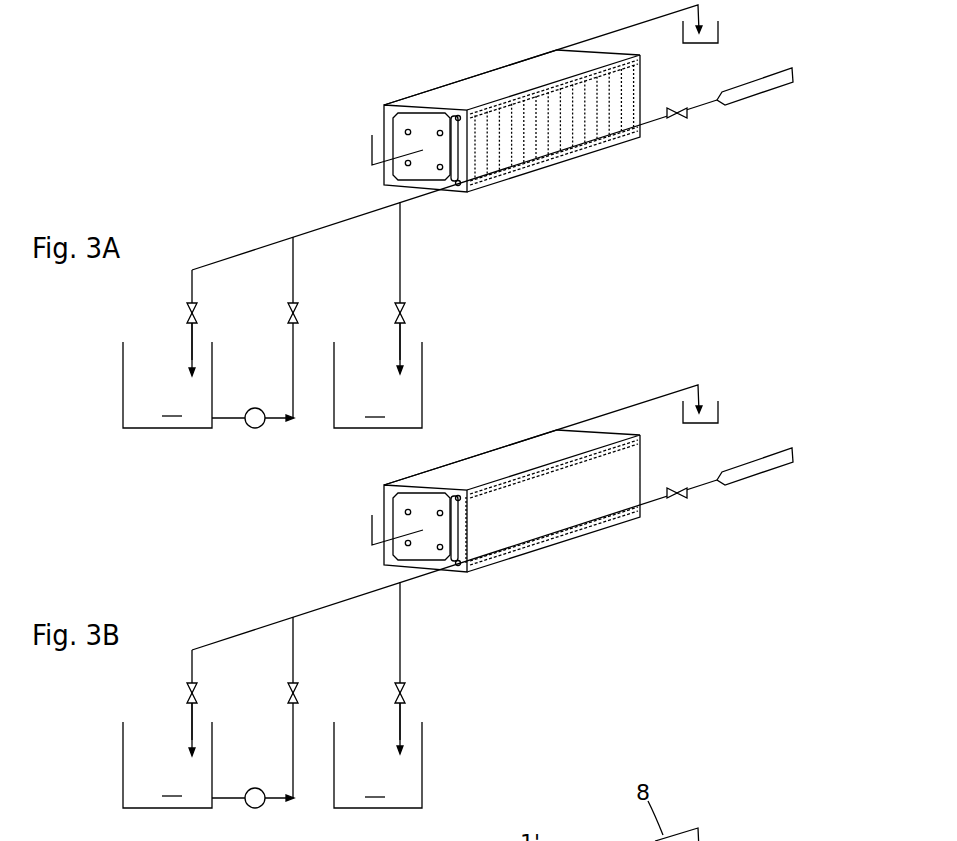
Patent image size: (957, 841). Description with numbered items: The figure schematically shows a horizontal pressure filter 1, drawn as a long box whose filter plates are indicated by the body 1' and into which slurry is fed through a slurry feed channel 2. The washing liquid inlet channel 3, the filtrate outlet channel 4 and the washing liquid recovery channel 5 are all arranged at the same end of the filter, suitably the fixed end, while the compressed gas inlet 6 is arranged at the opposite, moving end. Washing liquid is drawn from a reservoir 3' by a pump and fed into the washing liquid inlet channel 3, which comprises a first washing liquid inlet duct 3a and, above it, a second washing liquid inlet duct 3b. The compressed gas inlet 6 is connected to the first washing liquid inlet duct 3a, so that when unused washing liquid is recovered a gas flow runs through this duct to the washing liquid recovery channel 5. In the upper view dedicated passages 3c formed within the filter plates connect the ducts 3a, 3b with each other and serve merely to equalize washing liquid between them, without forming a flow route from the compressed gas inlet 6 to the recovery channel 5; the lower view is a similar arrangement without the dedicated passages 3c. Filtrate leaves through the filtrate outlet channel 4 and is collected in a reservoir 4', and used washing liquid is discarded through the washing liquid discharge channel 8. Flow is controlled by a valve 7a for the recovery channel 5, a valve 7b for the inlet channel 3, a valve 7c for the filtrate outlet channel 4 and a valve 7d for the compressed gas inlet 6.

In FIG. 3A, the horizontal pressure filter 1 is at (843, 269).
In FIG. 3B, the horizontal pressure filter 1 is at (845, 650).
In FIG. 3A, the container 1' is at (512, 96).
In FIG. 3B, the container 1' is at (512, 478).
In FIG. 3A, the slurry feed channel 2 is at (371, 146).
In FIG. 3B, the slurry feed channel 2 is at (361, 506).
In FIG. 3A, the washing liquid inlet channel 3 is at (253, 381).
In FIG. 3B, the washing liquid inlet channel 3 is at (253, 757).
In FIG. 3A, the liquid reservoir 3' is at (167, 385).
In FIG. 3B, the liquid reservoir 3' is at (167, 765).
In FIG. 3A, the first washing liquid inlet duct 3a is at (516, 168).
In FIG. 3B, the first washing liquid inlet duct 3a is at (554, 567).
In FIG. 3A, the second washing liquid inlet duct 3b is at (477, 107).
In FIG. 3B, the second washing liquid inlet duct 3b is at (554, 449).
In FIG. 3A, the dedicated passages 3c is at (583, 132).
In FIG. 3A, the filtrate outlet channel 4 is at (442, 341).
In FIG. 3B, the filtrate outlet channel 4 is at (442, 721).
In FIG. 3A, the reservoir 4' is at (378, 385).
In FIG. 3B, the reservoir 4' is at (378, 765).
In FIG. 3A, the washing liquid recovery channel 5 is at (191, 337).
In FIG. 3B, the washing liquid recovery channel 5 is at (143, 721).
In FIG. 3A, the compressed gas inlet 6 is at (707, 103).
In FIG. 3B, the compressed gas inlet 6 is at (750, 490).
In FIG. 3A, the valve 7a is at (188, 308).
In FIG. 3B, the valve 7a is at (138, 681).
In FIG. 3A, the valve 7b is at (290, 313).
In FIG. 3B, the valve 7b is at (268, 692).
In FIG. 3A, the valve 7c is at (402, 315).
In FIG. 3B, the valve 7c is at (423, 677).
In FIG. 3A, the valve 7d is at (680, 112).
In FIG. 3B, the valve 7d is at (703, 557).
In FIG. 3A, the washing liquid discharge channel 8 is at (650, 20).
In FIG. 3B, the washing liquid discharge channel 8 is at (551, 411).